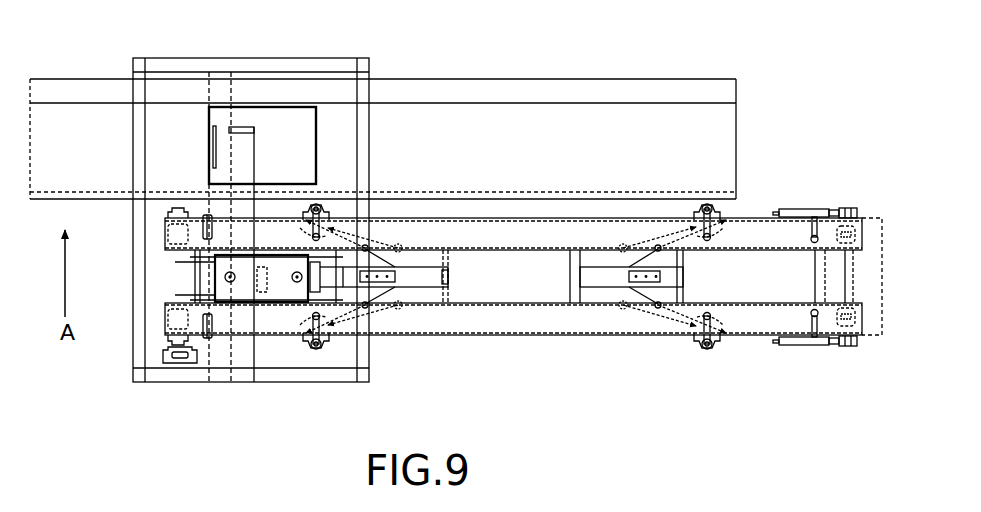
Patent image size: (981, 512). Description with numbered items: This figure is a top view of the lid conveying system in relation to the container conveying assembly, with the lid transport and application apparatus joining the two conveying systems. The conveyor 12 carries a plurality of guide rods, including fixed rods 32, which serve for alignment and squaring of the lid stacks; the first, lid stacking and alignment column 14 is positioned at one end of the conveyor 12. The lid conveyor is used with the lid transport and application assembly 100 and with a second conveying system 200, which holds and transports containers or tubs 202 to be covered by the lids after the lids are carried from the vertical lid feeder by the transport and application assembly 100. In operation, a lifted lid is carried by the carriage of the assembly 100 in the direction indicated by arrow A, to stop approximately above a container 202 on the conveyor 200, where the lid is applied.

The conveyor 12 is at (522, 283).
The lid stacking and alignment column 14 is at (753, 262).
The fixed rod 32 is at (818, 212).
The lid transport and application assembly 100 is at (254, 308).
The second conveying system 200 is at (508, 77).
The container 202 is at (290, 118).